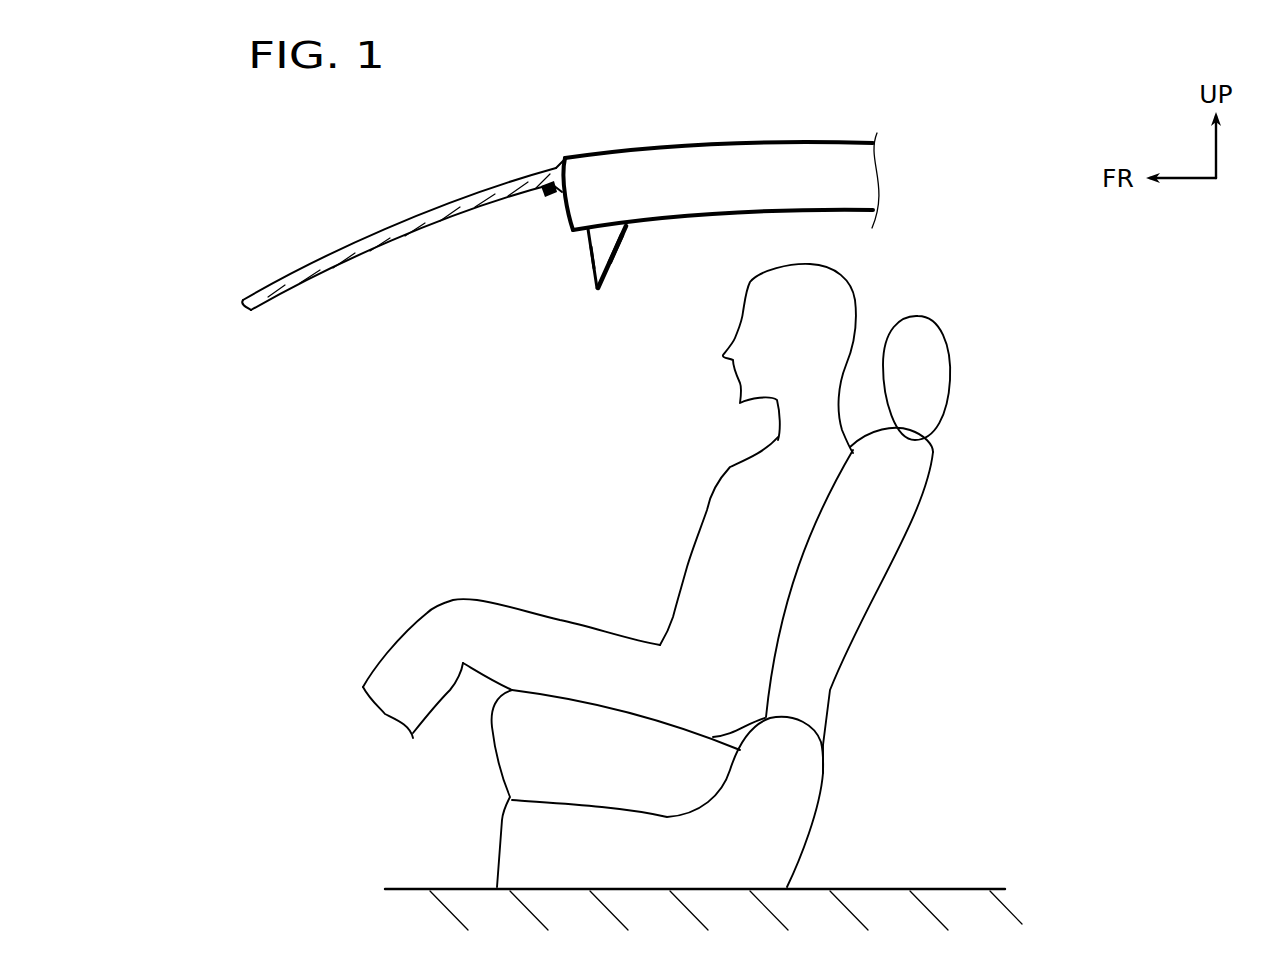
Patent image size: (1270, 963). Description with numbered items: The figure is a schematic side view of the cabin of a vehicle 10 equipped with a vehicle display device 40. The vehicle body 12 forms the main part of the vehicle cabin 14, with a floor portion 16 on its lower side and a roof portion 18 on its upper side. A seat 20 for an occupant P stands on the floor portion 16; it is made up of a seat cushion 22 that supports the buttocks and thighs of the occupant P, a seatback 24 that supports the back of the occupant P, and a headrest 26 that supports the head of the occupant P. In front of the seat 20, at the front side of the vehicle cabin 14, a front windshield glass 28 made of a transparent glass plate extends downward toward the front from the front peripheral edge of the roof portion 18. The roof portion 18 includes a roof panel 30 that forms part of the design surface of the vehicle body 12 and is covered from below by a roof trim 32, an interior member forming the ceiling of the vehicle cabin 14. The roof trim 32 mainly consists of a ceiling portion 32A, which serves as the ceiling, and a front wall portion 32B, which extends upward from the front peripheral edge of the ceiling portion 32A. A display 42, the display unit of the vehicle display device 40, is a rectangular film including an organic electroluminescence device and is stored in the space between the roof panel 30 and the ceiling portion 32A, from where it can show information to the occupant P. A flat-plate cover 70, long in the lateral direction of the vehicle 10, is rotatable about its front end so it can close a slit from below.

The vehicle 10 is at (522, 140).
The vehicle body 12 is at (800, 128).
The vehicle cabin 14 is at (583, 492).
The floor portion 16 is at (917, 887).
The roof portion 18 is at (725, 147).
The seat 20 is at (957, 366).
The seat cushion 22 is at (525, 760).
The seatback 24 is at (850, 572).
The headrest 26 is at (927, 333).
The front windshield glass 28 is at (343, 245).
The roof panel 30 is at (676, 148).
The roof trim 32 is at (830, 213).
The ceiling portion 32A is at (723, 218).
The front wall portion 32B is at (550, 200).
The vehicle display device 40 is at (607, 281).
The display 42 is at (619, 246).
The cover 70 is at (592, 256).
The occupant P is at (857, 300).